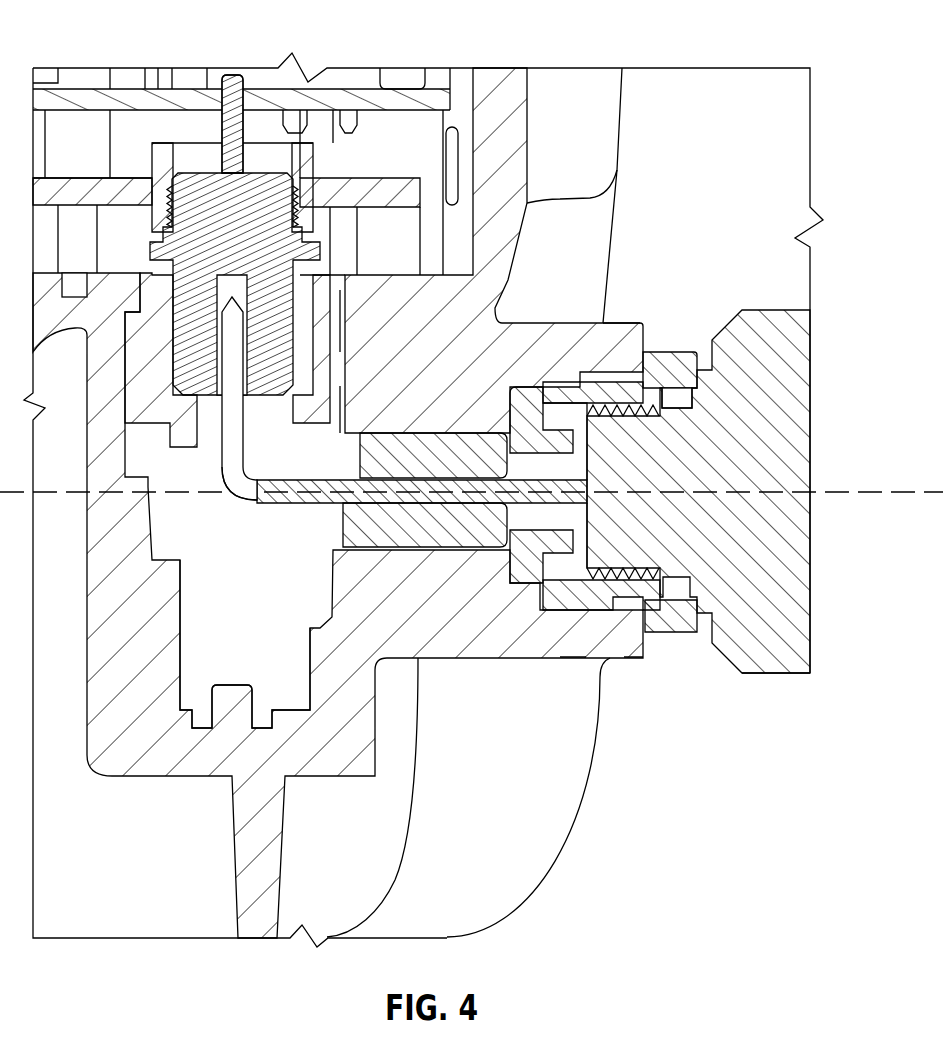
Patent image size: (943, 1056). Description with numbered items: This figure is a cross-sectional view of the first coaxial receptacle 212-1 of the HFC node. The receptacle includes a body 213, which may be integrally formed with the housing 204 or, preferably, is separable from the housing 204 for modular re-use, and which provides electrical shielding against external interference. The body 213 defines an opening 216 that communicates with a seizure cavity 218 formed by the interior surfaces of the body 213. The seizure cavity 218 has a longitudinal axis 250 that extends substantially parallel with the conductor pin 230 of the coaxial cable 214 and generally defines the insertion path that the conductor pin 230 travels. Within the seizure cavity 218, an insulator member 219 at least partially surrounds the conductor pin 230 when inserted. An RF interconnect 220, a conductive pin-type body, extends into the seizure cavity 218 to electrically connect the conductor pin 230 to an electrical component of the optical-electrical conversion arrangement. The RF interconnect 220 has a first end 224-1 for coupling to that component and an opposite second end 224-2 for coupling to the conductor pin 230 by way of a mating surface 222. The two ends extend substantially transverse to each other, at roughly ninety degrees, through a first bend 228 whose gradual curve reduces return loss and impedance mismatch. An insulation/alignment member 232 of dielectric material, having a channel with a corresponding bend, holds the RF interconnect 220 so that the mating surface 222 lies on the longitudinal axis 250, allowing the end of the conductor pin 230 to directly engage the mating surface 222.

The housing 204 is at (553, 92).
The body 213 is at (601, 324).
The first coaxial receptacle 212-1 is at (707, 335).
The coaxial cable 214 is at (752, 677).
The opening 216 is at (643, 598).
The seizure cavity 218 is at (413, 547).
The insulator member 219 is at (413, 435).
The RF interconnect 220 is at (263, 408).
The mating surface 222 is at (258, 483).
The first end 224-1 is at (258, 298).
The second end 224-2 is at (286, 511).
The first bend 228 is at (219, 483).
The conductor pin 230 is at (509, 548).
The insulation/alignment member 232 is at (209, 651).
The longitudinal axis 250 is at (845, 492).